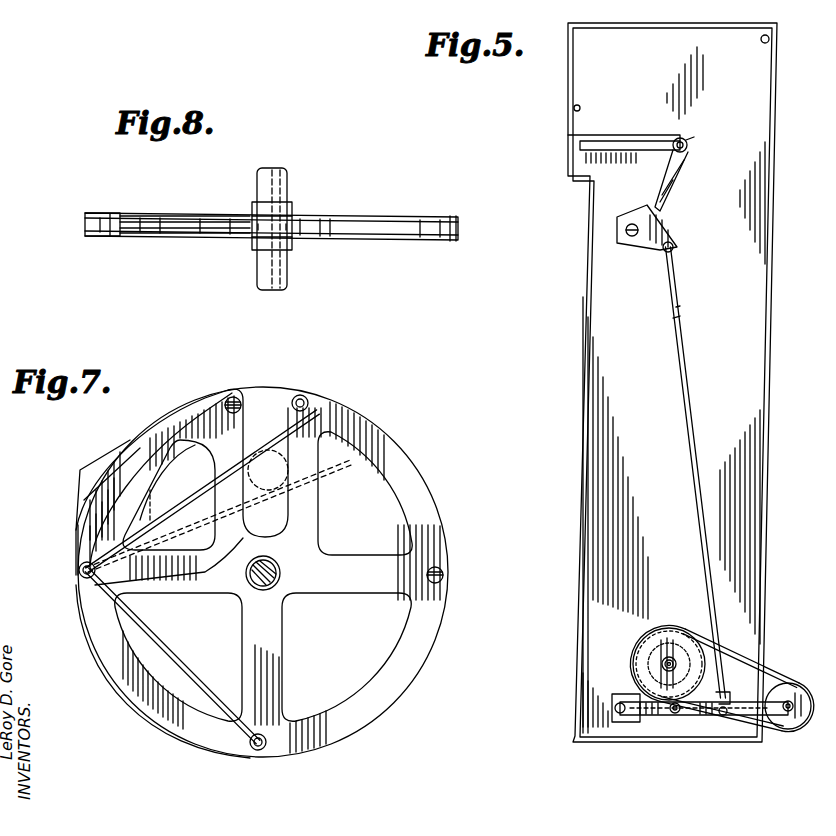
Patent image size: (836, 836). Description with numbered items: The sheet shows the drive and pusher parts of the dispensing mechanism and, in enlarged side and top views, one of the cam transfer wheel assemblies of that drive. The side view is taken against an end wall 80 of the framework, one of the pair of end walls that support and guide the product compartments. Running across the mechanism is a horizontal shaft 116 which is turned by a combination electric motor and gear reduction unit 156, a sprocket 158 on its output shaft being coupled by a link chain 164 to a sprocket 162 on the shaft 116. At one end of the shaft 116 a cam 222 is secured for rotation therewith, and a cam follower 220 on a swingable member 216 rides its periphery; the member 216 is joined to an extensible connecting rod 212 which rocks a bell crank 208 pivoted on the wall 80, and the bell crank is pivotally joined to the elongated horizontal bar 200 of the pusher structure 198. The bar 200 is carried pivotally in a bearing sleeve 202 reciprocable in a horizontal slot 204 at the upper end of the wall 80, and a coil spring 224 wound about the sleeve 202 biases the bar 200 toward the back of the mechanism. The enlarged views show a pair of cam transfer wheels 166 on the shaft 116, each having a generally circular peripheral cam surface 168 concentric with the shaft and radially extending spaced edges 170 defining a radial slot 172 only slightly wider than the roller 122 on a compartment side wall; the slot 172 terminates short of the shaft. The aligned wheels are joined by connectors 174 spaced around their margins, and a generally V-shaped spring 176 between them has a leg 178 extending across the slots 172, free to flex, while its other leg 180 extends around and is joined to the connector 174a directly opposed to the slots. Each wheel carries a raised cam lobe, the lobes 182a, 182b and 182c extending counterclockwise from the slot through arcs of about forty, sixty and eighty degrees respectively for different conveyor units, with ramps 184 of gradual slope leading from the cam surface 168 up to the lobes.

In FIG. 5, the end wall 80 is at (758, 388).
In FIG. 5, the horizontal shaft 116 is at (672, 656).
In FIG. 8, the horizontal shaft 116 is at (272, 182).
In FIG. 7, the horizontal shaft 116 is at (282, 573).
In FIG. 7, the roller 122 is at (283, 448).
In FIG. 5, the combination electric motor and gear reduction unit 156 is at (792, 718).
In FIG. 5, the sprocket 158 is at (784, 688).
In FIG. 5, the sprocket 162 is at (660, 630).
In FIG. 5, the link chain 164 is at (748, 666).
In FIG. 8, the cam transfer wheel 166 is at (385, 215).
In FIG. 7, the cam transfer wheel 166 is at (440, 488).
In FIG. 7, the circular peripheral cam surface 168 is at (378, 428).
In FIG. 8, the radially extending spaced edges 170 is at (290, 244).
In FIG. 7, the radially extending spaced edges 170 is at (240, 418).
In FIG. 7, the radial slot 172 is at (240, 398).
In FIG. 8, the connector 174 is at (462, 222).
In FIG. 7, the connector 174 is at (308, 398).
In FIG. 7, the connector 174a is at (254, 750).
In FIG. 7, the V-shaped spring 176 is at (165, 662).
In FIG. 7, the spring leg 178 is at (160, 500).
In FIG. 7, the spring leg 180 is at (178, 668).
In FIG. 8, the raised cam lobe 182a is at (186, 238).
In FIG. 7, the raised cam lobe 182a is at (210, 395).
In FIG. 8, the raised cam lobe 182b is at (155, 214).
In FIG. 7, the raised cam lobe 182b is at (122, 440).
In FIG. 7, the raised cam lobe 182c is at (78, 490).
In FIG. 8, the ramp 184 is at (100, 212).
In FIG. 7, the ramp 184 is at (84, 490).
In FIG. 5, the pusher structure 198 is at (690, 138).
In FIG. 5, the horizontal bar 200 is at (688, 144).
In FIG. 5, the bearing sleeve 202 is at (682, 158).
In FIG. 5, the horizontal slot 204 is at (636, 150).
In FIG. 5, the bell crank 208 is at (672, 226).
In FIG. 5, the connecting rod 212 is at (672, 366).
In FIG. 5, the swingable member 216 is at (645, 722).
In FIG. 5, the cam follower 220 is at (680, 716).
In FIG. 5, the cam 222 is at (634, 656).
In FIG. 5, the coil spring 224 is at (604, 133).